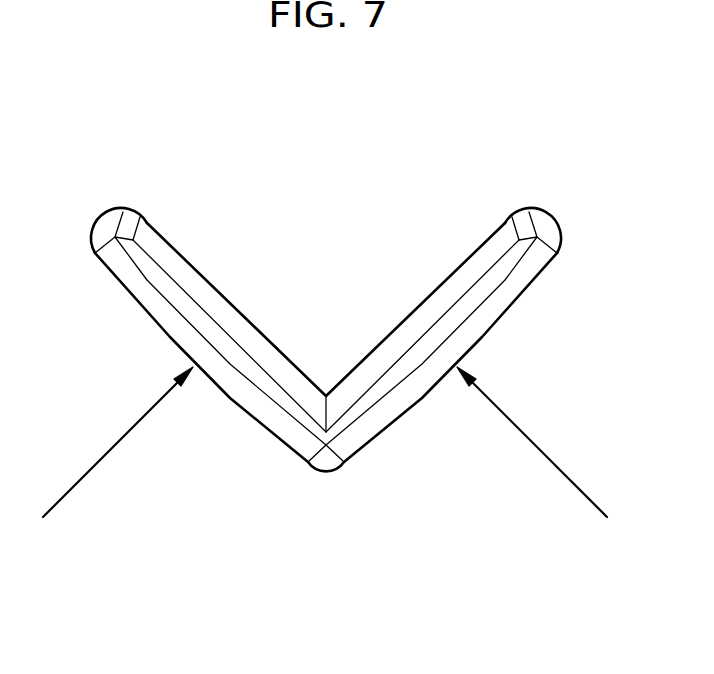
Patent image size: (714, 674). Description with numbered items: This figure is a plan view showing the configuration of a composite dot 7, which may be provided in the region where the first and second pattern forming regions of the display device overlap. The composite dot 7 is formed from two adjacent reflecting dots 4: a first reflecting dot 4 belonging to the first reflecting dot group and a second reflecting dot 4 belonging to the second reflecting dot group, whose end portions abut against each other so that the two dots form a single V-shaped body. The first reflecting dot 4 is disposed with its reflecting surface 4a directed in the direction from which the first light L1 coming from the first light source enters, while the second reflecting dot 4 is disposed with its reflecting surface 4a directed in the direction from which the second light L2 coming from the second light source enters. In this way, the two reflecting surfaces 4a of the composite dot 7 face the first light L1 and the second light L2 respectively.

The composite dot 7 is at (172, 172).
The reflecting dot 4 is at (199, 252).
The reflecting surface 4a is at (263, 418).
The first light L1 is at (90, 470).
The second light L2 is at (547, 455).